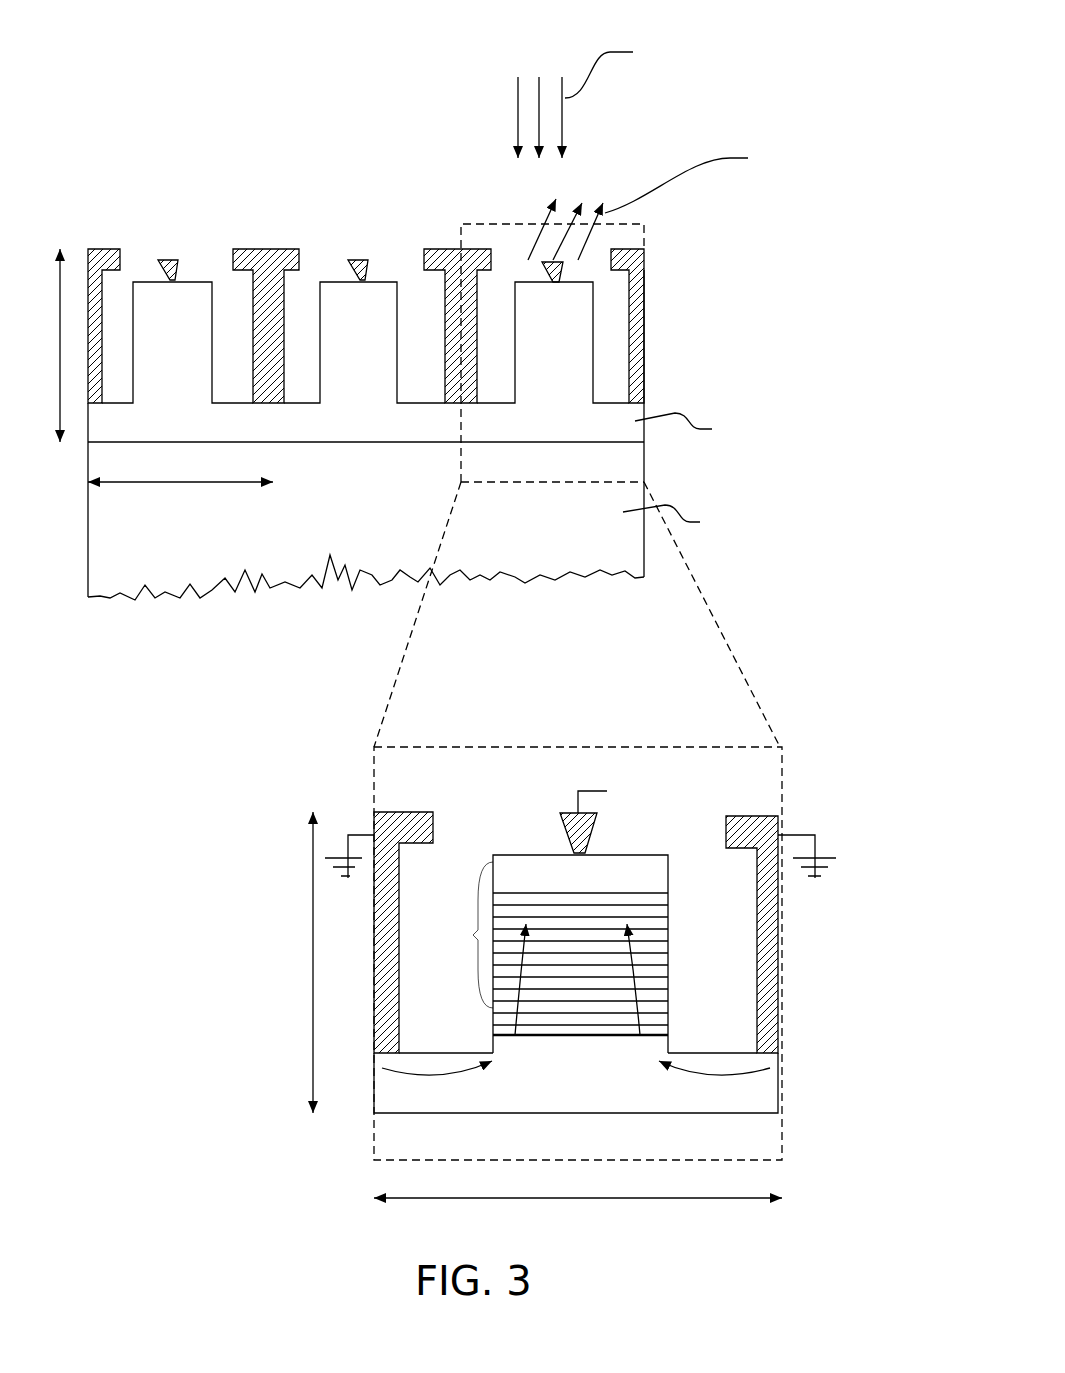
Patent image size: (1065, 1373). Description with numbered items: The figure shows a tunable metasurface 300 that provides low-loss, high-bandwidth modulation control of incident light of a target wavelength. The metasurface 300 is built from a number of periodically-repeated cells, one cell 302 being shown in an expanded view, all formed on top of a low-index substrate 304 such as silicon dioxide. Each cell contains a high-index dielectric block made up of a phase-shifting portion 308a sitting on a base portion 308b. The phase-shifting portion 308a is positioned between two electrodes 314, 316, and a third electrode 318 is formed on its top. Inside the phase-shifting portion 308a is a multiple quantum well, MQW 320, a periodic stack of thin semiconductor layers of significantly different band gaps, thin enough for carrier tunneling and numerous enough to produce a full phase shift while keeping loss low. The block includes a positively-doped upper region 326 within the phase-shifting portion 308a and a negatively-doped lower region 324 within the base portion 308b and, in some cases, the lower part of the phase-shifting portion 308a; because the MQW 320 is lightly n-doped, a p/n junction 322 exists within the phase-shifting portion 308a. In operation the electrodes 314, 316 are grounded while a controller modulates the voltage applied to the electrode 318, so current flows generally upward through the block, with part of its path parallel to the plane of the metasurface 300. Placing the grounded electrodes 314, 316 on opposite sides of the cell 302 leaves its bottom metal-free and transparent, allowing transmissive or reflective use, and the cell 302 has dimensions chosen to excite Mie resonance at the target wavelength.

The tunable metasurface 300 is at (168, 63).
The cell 302 is at (476, 216).
The low-index substrate 304 is at (513, 818).
The phase-shifting portion 308a is at (466, 952).
The base portion 308b is at (475, 1043).
The electrode 314 is at (366, 651).
The electrode 316 is at (781, 934).
The third electrode 318 is at (562, 833).
The multiple quantum well 320 is at (580, 970).
The p/n junction 322 is at (622, 894).
The negatively-doped lower region 324 is at (638, 1097).
The positively-doped upper region 326 is at (642, 865).